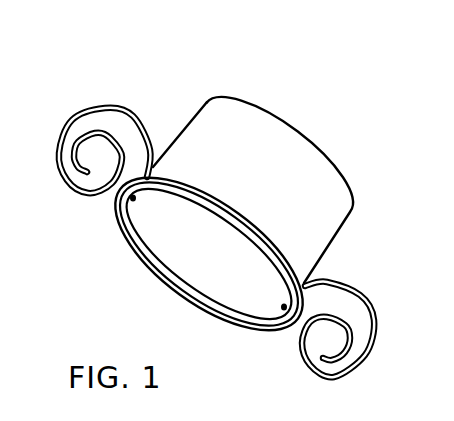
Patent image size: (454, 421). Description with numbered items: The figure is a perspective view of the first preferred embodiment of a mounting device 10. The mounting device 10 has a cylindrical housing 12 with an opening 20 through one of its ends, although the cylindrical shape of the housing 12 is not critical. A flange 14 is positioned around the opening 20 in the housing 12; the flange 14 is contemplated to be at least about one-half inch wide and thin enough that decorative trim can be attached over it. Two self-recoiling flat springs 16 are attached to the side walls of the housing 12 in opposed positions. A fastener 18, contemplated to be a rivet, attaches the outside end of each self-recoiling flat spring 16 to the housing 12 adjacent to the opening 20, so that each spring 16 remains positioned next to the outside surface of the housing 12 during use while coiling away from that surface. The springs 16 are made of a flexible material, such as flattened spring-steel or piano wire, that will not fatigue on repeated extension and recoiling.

The mounting device 10 is at (366, 160).
The cylindrical housing 12 is at (352, 223).
The flange 14 is at (138, 243).
The self-recoiling flat springs 16 is at (79, 110).
The fastener 18 is at (133, 205).
The opening 20 is at (212, 270).